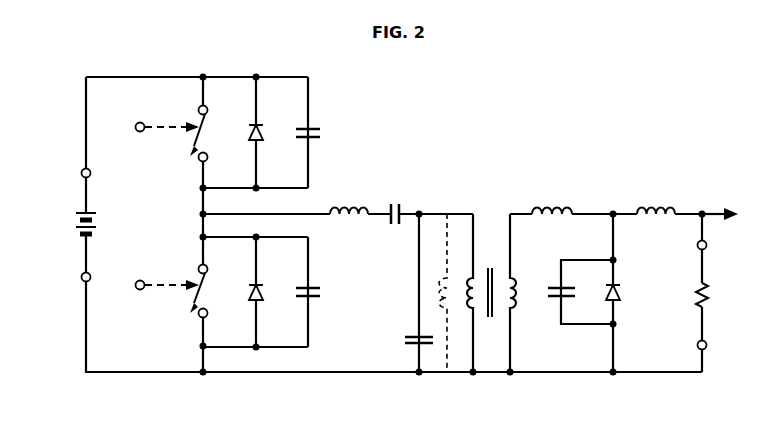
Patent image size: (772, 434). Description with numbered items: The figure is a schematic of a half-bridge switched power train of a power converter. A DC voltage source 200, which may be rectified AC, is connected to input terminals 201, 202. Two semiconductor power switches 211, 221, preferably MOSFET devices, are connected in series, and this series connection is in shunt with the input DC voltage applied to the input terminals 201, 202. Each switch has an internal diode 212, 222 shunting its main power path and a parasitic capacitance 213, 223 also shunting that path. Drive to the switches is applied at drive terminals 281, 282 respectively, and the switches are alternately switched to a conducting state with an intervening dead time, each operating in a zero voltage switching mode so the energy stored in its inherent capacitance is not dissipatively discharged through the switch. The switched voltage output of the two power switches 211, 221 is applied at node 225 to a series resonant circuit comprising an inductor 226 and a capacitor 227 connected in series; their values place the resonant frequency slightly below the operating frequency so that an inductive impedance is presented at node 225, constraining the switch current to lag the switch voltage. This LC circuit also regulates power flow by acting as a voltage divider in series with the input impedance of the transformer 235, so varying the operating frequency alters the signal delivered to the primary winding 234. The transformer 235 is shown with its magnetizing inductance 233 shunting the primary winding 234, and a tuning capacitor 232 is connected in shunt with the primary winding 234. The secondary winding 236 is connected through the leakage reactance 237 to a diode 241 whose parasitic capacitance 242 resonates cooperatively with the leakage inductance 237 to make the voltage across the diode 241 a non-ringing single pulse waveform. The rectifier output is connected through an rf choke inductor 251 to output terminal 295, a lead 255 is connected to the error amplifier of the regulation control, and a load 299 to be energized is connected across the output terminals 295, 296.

The DC voltage source 200 is at (66, 224).
The input terminal 201 is at (68, 174).
The input terminal 202 is at (68, 278).
The power switch 211 is at (213, 134).
The internal diode 212 is at (266, 130).
The parasitic capacitance 213 is at (329, 133).
The power switch 221 is at (213, 291).
The internal diode 222 is at (266, 290).
The parasitic capacitance 223 is at (329, 293).
The node 225 is at (201, 214).
The inductor 226 is at (349, 195).
The capacitor 227 is at (396, 200).
The tuning capacitor 232 is at (401, 341).
The magnetizing inductance 233 is at (440, 280).
The primary winding 234 is at (470, 305).
The power transformer 235 is at (515, 197).
The secondary winding 236 is at (524, 294).
The leakage reactance 237 is at (553, 195).
The diode 241 is at (632, 294).
The parasitic capacitance 242 is at (542, 292).
The rf choke inductor 251 is at (656, 195).
The lead 255 is at (718, 202).
The drive terminal 281 is at (163, 116).
The drive terminal 282 is at (163, 273).
The output terminal 295 is at (686, 246).
The output terminal 296 is at (686, 346).
The load 299 is at (721, 295).